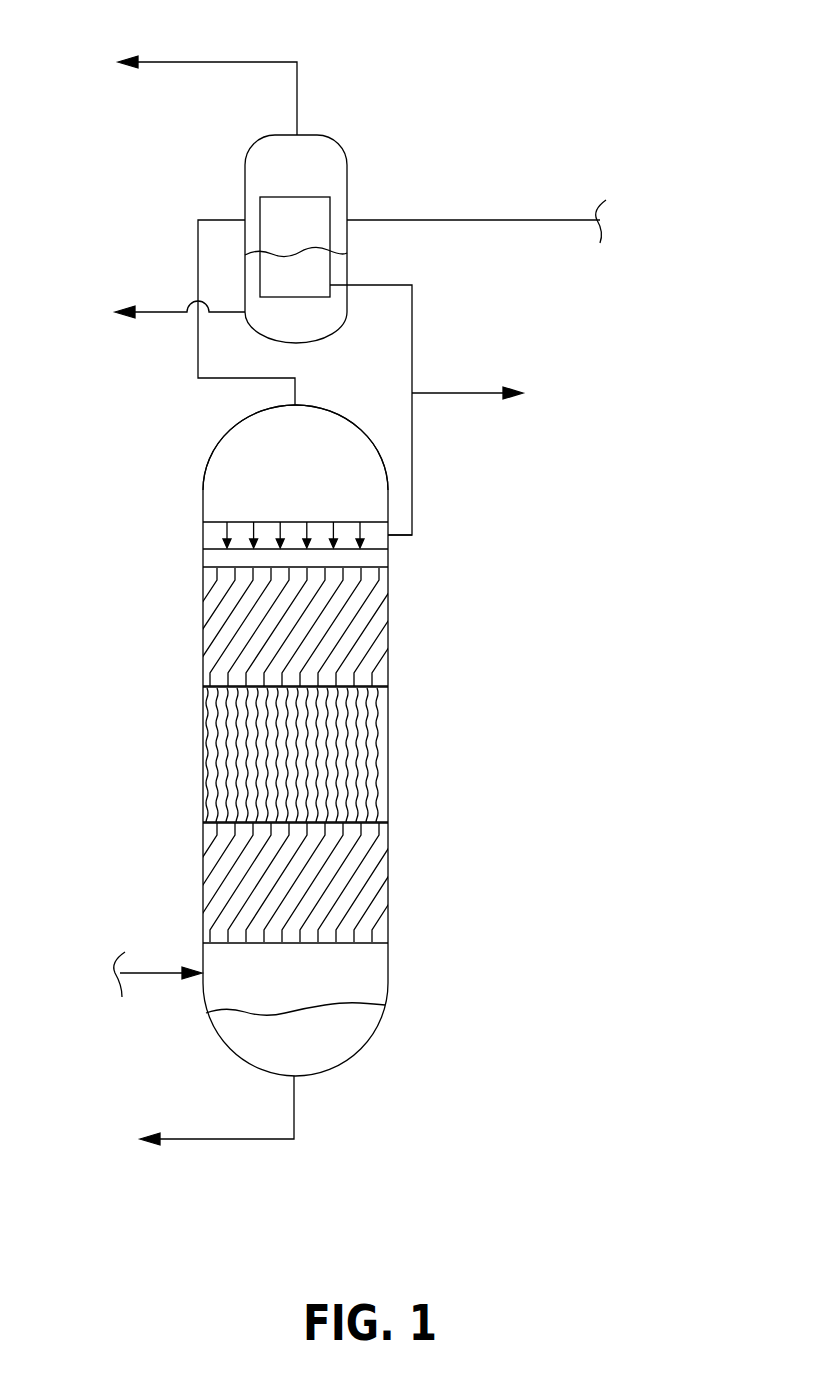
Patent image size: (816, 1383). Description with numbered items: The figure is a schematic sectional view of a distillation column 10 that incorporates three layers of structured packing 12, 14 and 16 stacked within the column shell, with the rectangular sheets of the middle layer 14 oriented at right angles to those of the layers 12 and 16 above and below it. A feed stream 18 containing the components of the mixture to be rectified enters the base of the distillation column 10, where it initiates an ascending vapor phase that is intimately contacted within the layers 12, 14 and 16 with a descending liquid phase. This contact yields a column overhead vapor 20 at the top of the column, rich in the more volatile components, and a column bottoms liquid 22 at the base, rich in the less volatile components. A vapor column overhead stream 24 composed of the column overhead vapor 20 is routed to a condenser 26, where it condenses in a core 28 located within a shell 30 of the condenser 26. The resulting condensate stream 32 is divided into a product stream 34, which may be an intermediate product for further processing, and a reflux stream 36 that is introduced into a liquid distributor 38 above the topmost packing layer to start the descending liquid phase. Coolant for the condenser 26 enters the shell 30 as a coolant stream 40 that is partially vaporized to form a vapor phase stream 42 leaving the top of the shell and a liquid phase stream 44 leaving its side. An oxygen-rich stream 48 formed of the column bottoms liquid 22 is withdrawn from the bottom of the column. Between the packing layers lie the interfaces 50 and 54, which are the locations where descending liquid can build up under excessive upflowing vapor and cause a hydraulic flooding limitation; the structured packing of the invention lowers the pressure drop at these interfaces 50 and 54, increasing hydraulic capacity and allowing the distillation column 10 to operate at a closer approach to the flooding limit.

The distillation column 10 is at (460, 737).
The layer of structured packing 12 is at (380, 625).
The layer of structured packing 14 is at (383, 725).
The layer of structured packing 16 is at (388, 858).
The feed stream 18 is at (158, 973).
The column overhead vapor 20 is at (243, 480).
The column bottoms liquid 22 is at (347, 1032).
The vapor column overhead stream 24 is at (198, 352).
The condenser 26 is at (342, 202).
The core 28 is at (303, 220).
The shell 30 is at (317, 137).
The condensate stream 32 is at (412, 332).
The product stream 34 is at (473, 393).
The reflux stream 36 is at (412, 480).
The liquid distributor 38 is at (212, 538).
The coolant stream 40 is at (520, 220).
The vapor phase stream 42 is at (200, 62).
The liquid phase stream 44 is at (158, 312).
The oxygen-rich stream 48 is at (222, 1139).
The interface 50 is at (233, 688).
The interface 54 is at (227, 823).